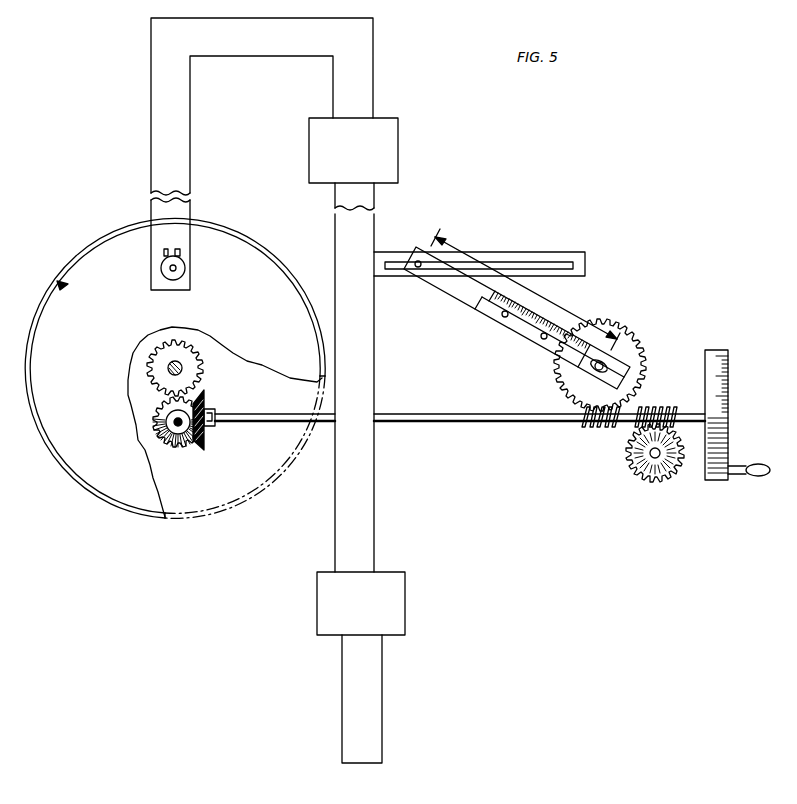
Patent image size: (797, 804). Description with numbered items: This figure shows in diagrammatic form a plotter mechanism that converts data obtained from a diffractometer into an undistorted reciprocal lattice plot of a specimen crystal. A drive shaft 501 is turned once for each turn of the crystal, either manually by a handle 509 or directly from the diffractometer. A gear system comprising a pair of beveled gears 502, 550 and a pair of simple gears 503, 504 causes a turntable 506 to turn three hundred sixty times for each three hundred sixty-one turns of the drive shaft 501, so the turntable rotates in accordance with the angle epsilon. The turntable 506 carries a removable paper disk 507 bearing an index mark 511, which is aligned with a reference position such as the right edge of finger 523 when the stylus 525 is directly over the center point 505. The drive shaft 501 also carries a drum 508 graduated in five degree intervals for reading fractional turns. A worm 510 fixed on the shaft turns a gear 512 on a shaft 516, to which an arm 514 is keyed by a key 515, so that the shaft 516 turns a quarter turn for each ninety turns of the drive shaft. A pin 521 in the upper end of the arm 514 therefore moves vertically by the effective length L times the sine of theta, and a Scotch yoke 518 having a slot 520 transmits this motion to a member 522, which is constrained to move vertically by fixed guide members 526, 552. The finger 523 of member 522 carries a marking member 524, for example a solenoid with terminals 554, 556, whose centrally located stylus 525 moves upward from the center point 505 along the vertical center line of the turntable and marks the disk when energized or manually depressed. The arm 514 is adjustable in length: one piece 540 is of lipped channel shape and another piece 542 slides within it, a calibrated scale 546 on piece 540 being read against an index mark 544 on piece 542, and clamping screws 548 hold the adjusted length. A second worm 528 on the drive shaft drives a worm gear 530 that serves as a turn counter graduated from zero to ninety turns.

The drive shaft 501 is at (256, 414).
The beveled gear 502 is at (206, 435).
The simple gear 503 is at (162, 414).
The simple gear 504 is at (190, 373).
The center point 505 is at (167, 369).
The turntable 506 is at (120, 512).
The paper disk 507 is at (75, 462).
The drum 508 is at (717, 349).
The handle 509 is at (758, 477).
The worm 510 is at (595, 427).
The index mark 511 is at (60, 287).
The gear 512 is at (631, 330).
The arm 514 is at (543, 316).
The key 515 is at (598, 368).
The shaft 516 is at (604, 367).
The Scotch yoke 518 is at (562, 251).
The slot 520 is at (531, 261).
The pin 521 is at (420, 272).
The member 522 is at (374, 93).
The finger 523 is at (160, 153).
The marking member 524 is at (183, 279).
The stylus 525 is at (177, 268).
The fixed guide member 526 is at (316, 605).
The worm 528 is at (662, 403).
The worm gear 530 is at (643, 471).
The piece 540 is at (553, 350).
The piece 542 is at (442, 296).
The index mark 544 is at (523, 328).
The calibrated scale 546 is at (491, 299).
The clamping screws 548 is at (505, 320).
The beveled gear 550 is at (181, 449).
The fixed guide member 552 is at (309, 151).
The terminal 554 is at (181, 252).
The terminal 556 is at (164, 252).